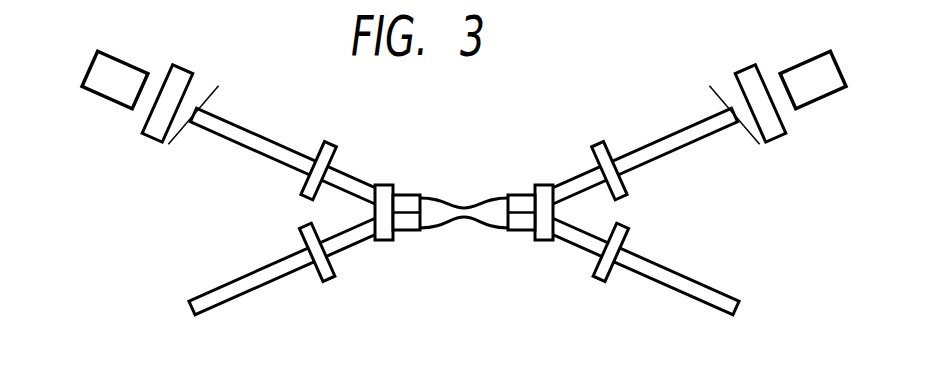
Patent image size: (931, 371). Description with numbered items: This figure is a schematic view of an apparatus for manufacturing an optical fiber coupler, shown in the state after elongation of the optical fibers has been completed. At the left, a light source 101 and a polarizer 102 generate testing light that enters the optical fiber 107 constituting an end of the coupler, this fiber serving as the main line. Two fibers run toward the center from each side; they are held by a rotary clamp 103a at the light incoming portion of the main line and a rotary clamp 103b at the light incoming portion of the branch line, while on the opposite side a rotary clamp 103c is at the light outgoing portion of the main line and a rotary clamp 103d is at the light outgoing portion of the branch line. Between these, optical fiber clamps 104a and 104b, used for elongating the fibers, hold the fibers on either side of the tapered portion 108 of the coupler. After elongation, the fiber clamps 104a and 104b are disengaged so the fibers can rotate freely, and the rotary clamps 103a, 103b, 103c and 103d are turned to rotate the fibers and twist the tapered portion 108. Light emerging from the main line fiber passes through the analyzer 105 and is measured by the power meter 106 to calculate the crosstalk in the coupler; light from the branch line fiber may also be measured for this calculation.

The light source 101 is at (113, 87).
The polarizer 102 is at (155, 137).
The optical fiber 107 is at (233, 134).
The rotary clamp 103a is at (317, 152).
The rotary clamp 103b is at (318, 265).
The rotary clamp 103c is at (603, 158).
The rotary clamp 103d is at (605, 265).
The optical fiber clamp 104a is at (387, 244).
The optical fiber clamp 104b is at (543, 240).
The tapered portion 108 is at (470, 208).
The analyzer 105 is at (770, 128).
The power meter 106 is at (815, 88).